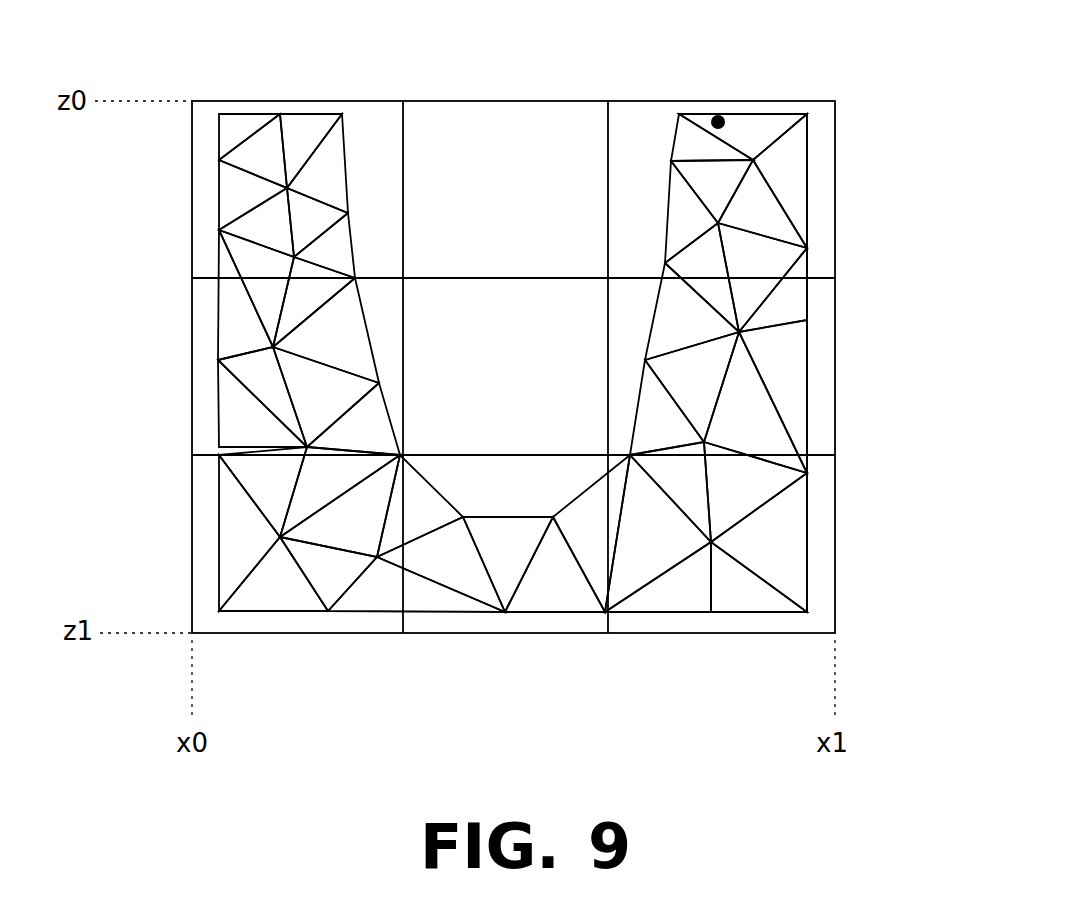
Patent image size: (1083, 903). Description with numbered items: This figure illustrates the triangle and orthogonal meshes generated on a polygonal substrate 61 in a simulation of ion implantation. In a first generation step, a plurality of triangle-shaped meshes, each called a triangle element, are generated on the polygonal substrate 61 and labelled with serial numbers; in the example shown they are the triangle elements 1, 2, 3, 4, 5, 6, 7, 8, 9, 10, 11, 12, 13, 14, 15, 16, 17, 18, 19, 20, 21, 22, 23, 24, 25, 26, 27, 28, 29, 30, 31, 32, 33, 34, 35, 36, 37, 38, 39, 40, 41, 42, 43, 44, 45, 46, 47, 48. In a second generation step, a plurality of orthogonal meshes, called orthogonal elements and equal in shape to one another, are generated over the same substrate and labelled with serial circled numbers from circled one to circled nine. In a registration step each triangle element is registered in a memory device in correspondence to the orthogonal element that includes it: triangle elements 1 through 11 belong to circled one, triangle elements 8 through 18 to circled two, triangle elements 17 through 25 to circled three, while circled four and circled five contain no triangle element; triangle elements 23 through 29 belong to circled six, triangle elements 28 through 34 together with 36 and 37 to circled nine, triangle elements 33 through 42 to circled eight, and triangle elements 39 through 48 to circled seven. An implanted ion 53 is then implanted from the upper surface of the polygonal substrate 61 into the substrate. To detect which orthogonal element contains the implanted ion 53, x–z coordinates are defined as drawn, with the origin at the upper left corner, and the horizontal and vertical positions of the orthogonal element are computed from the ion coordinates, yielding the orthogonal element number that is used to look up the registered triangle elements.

The triangle element 1 is at (155, 197).
The triangle element 2 is at (200, 347).
The triangle element 3 is at (200, 510).
The triangle element 4 is at (492, 65).
The triangle element 5 is at (372, 266).
The triangle element 6 is at (505, 673).
The triangle element 7 is at (877, 176).
The triangle element 8 is at (877, 332).
The triangle element 9 is at (877, 481).
The triangle element 10 is at (256, 288).
The triangle element 11 is at (245, 295).
The triangle element 12 is at (326, 330).
The triangle element 13 is at (326, 397).
The triangle element 14 is at (262, 397).
The triangle element 15 is at (262, 403).
The triangle element 16 is at (353, 419).
The triangle element 17 is at (263, 492).
The triangle element 18 is at (340, 492).
The triangle element 19 is at (249, 533).
The triangle element 20 is at (340, 506).
The triangle element 21 is at (273, 574).
The triangle element 22 is at (328, 574).
The triangle element 23 is at (416, 584).
The triangle element 24 is at (420, 506).
The triangle element 25 is at (441, 564).
The triangle element 26 is at (508, 564).
The triangle element 27 is at (555, 564).
The triangle element 28 is at (591, 533).
The triangle element 29 is at (658, 533).
The triangle element 30 is at (658, 577).
The triangle element 31 is at (759, 577).
The triangle element 32 is at (759, 542).
The triangle element 33 is at (755, 492).
The triangle element 34 is at (670, 492).
The triangle element 35 is at (667, 407).
The triangle element 36 is at (755, 402).
The triangle element 37 is at (773, 396).
The triangle element 38 is at (692, 387).
The triangle element 39 is at (692, 311).
The triangle element 40 is at (773, 290).
The triangle element 41 is at (702, 277).
The triangle element 42 is at (762, 277).
The triangle element 43 is at (691, 212).
The triangle element 44 is at (762, 204).
The triangle element 45 is at (780, 181).
The triangle element 46 is at (712, 191).
The triangle element 47 is at (712, 138).
The triangle element 48 is at (743, 137).
The implanted ion 53 is at (718, 116).
The polygonal substrate 61 is at (808, 148).